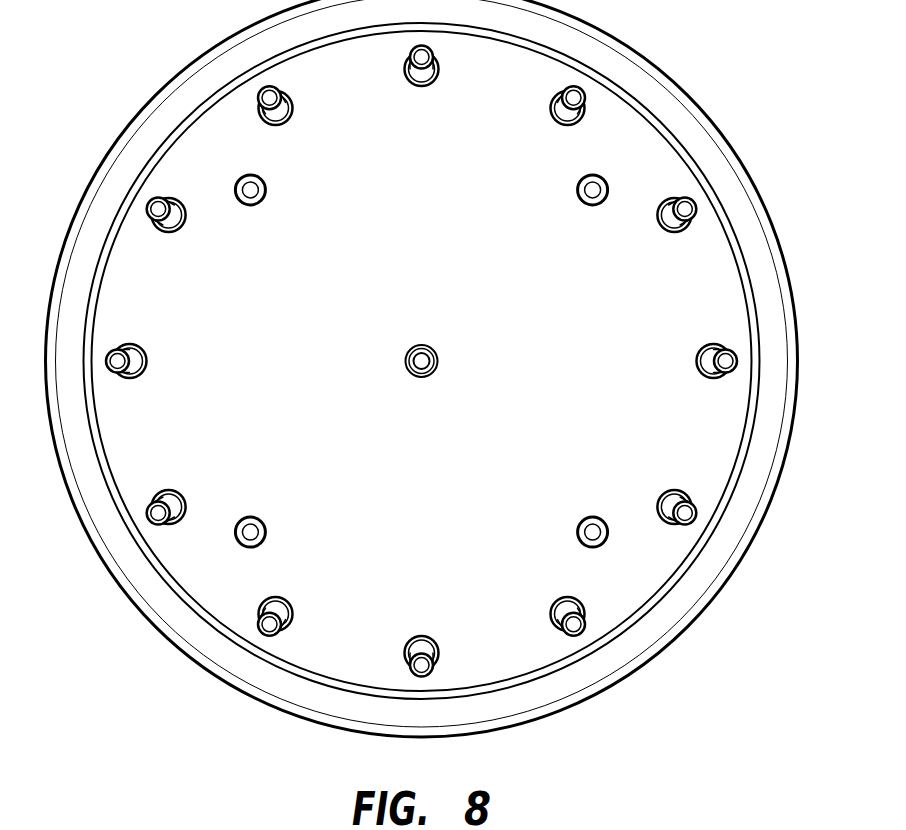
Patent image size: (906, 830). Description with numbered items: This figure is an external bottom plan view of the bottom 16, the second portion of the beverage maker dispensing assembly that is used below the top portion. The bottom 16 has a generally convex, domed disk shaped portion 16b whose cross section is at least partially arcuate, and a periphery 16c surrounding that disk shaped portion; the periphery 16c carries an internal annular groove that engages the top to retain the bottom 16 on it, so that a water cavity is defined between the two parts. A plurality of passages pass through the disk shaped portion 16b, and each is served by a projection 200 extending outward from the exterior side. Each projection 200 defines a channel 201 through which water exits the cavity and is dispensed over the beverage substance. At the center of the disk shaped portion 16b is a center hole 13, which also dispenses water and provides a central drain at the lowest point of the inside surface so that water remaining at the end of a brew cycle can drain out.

The bottom 16 is at (435, 371).
The generally convex disk shaped portion 16b is at (233, 118).
The periphery 16c is at (753, 539).
The projection 200 is at (98, 163).
The channel 201 is at (157, 208).
The center hole 13 is at (422, 361).